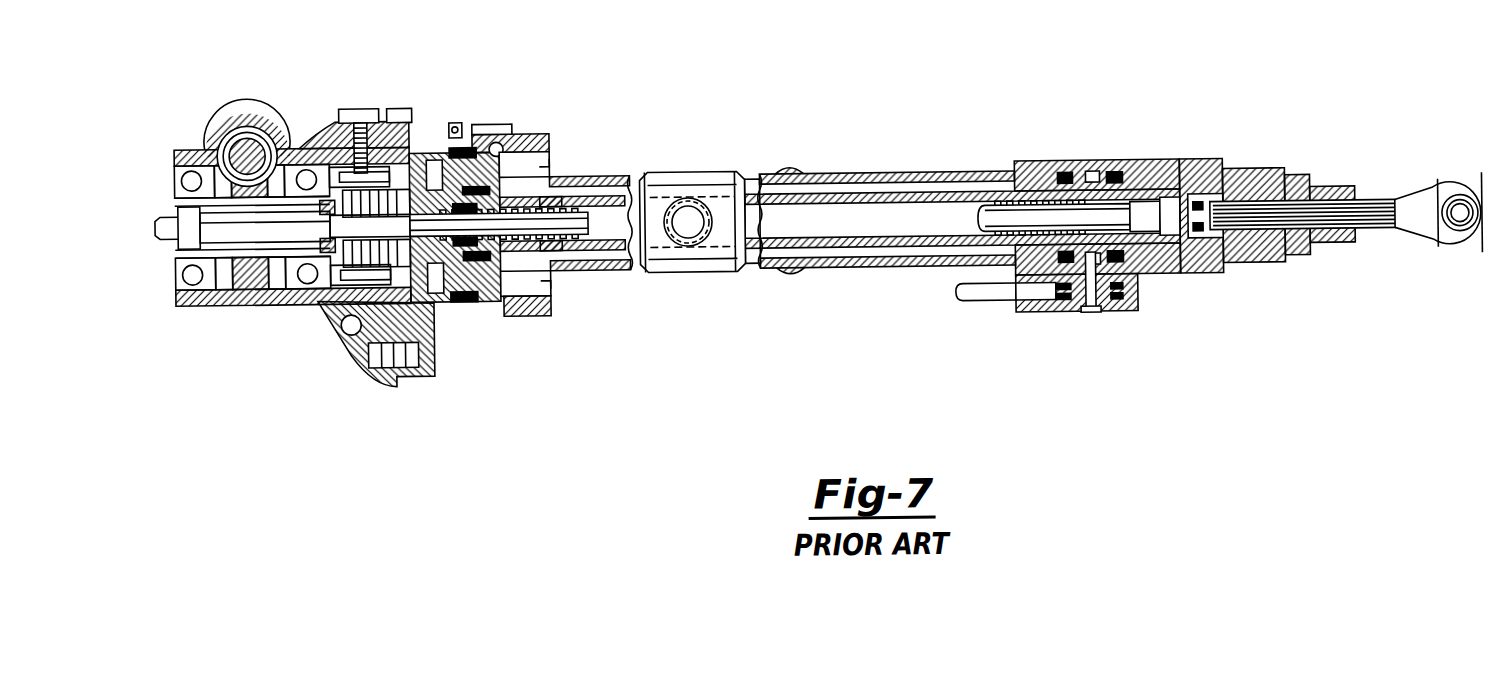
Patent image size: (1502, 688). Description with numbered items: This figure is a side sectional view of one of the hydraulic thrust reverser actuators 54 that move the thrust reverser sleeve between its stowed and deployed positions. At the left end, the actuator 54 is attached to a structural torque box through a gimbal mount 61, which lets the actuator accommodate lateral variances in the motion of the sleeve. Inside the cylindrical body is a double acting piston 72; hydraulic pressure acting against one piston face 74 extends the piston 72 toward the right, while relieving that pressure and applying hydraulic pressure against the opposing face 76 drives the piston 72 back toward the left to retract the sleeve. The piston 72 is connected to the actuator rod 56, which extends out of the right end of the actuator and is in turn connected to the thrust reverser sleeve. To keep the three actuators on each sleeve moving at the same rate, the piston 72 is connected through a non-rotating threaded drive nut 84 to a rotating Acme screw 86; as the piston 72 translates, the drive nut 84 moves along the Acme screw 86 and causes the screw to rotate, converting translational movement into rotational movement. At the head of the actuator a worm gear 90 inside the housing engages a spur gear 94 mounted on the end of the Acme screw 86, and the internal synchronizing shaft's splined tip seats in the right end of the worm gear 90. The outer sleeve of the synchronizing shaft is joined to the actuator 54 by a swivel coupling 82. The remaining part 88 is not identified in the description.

The hydraulic actuator 54 is at (792, 156).
The actuator rod 56 is at (1372, 213).
The gimbal mount 61 is at (705, 262).
The double acting piston 72 is at (492, 251).
The piston face 74 is at (432, 277).
The opposing piston face 76 is at (505, 251).
The swivel coupling 82 is at (1180, 216).
The threaded drive nut 84 is at (497, 205).
The Acme screw 86 is at (547, 202).
The rod 88 is at (1247, 222).
The worm gear 90 is at (248, 140).
The spur gear 94 is at (293, 172).